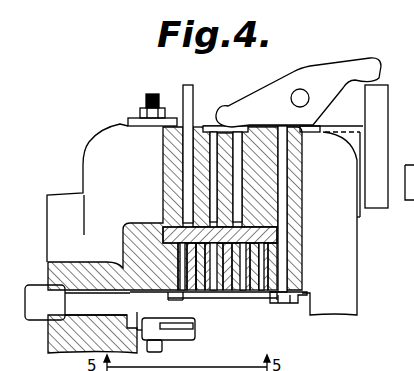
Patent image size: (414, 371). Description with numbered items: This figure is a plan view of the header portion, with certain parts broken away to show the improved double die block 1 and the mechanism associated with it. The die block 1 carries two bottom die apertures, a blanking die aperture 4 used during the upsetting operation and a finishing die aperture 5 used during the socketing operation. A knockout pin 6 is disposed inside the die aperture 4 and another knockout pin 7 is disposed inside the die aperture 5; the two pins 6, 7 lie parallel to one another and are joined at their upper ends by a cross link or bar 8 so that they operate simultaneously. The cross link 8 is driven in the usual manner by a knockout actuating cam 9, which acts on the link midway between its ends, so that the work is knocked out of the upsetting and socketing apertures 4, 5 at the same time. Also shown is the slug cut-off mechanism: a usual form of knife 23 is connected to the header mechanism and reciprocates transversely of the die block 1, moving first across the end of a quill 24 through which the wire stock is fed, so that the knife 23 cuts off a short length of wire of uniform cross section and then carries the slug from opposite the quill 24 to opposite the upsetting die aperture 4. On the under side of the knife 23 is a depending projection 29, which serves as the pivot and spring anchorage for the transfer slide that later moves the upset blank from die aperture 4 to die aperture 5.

The double die block 1 is at (268, 299).
The blanking die aperture 4 is at (221, 293).
The finishing die aperture 5 is at (256, 292).
The knockout pin 6 is at (207, 127).
The knockout pin 7 is at (256, 126).
The cross link 8 is at (222, 127).
The knockout actuating cam 9 is at (251, 100).
The knife 23 is at (197, 292).
The quill 24 is at (181, 288).
The depending projection 29 is at (413, 213).